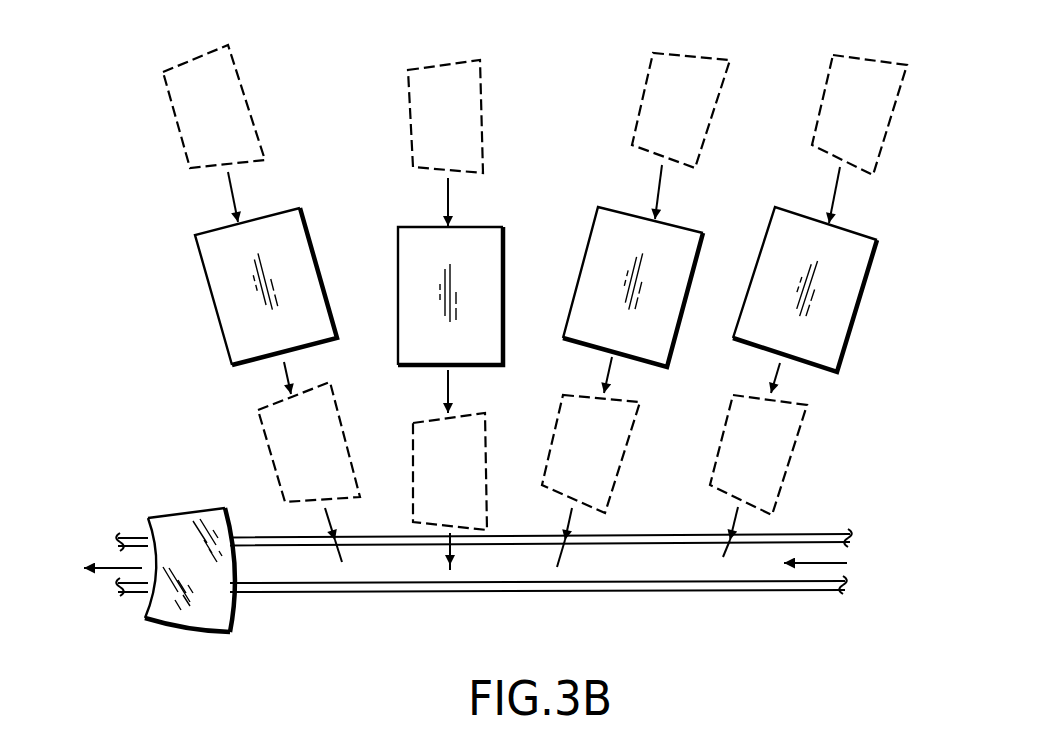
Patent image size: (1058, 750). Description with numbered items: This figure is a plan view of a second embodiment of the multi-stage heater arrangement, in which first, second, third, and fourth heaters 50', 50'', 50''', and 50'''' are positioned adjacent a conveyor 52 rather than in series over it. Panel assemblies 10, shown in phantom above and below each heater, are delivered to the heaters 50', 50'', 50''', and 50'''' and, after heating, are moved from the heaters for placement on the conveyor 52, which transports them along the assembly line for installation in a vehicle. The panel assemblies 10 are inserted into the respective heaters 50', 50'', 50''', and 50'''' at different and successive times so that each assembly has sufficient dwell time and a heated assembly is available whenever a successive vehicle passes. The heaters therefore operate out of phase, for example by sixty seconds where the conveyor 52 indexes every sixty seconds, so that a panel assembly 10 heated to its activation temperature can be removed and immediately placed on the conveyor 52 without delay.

The panel assembly 10 is at (417, 110).
The first stage heater 50' is at (284, 270).
The second stage heater 50'' is at (488, 271).
The third stage heater 50''' is at (667, 272).
The fourth stage heater 50'''' is at (840, 280).
The conveyor 52 is at (617, 600).